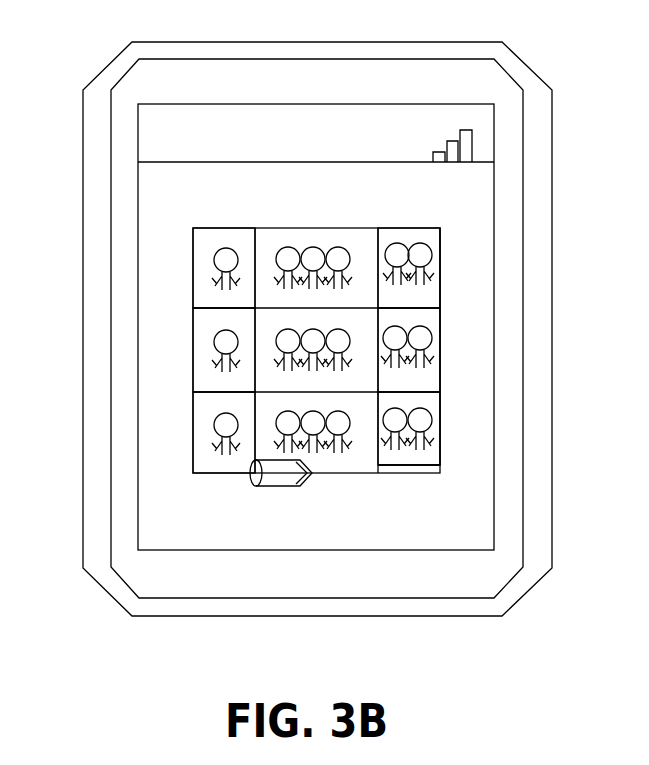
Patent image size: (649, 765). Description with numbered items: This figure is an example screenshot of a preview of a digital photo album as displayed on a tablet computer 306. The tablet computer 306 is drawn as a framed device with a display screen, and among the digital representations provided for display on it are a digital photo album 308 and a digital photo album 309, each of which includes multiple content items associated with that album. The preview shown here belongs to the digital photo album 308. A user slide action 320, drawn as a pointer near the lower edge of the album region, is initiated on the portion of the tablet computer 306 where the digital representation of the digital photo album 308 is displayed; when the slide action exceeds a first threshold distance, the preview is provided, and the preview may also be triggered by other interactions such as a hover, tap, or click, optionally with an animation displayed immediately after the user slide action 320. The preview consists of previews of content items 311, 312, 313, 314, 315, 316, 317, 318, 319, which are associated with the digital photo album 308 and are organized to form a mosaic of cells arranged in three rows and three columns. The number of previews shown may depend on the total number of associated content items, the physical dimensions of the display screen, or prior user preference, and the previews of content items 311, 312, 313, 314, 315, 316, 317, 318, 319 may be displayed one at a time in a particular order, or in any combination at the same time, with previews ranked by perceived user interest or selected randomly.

The tablet computer 306 is at (322, 42).
The digital photo album 308 is at (330, 473).
The digital photo album 309 is at (247, 327).
The preview of content item 311 is at (193, 243).
The preview of content item 312 is at (193, 292).
The preview of content item 313 is at (440, 251).
The preview of content item 314 is at (193, 328).
The preview of content item 315 is at (193, 378).
The preview of content item 316 is at (440, 336).
The preview of content item 317 is at (193, 413).
The preview of content item 318 is at (440, 465).
The preview of content item 319 is at (440, 413).
The user slide action 320 is at (268, 486).